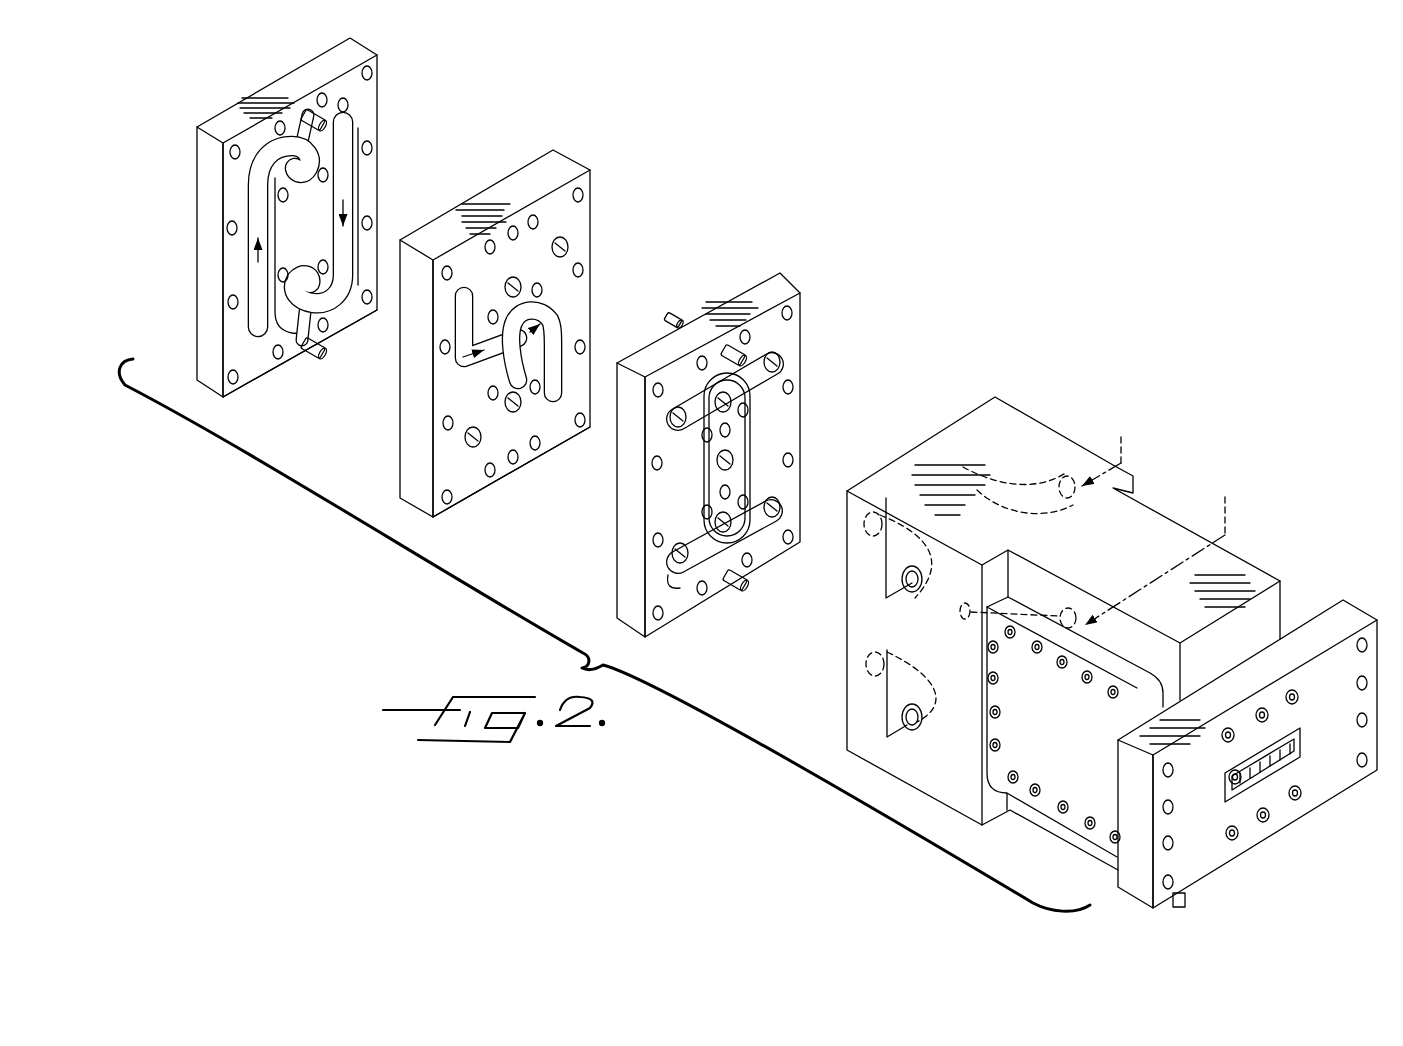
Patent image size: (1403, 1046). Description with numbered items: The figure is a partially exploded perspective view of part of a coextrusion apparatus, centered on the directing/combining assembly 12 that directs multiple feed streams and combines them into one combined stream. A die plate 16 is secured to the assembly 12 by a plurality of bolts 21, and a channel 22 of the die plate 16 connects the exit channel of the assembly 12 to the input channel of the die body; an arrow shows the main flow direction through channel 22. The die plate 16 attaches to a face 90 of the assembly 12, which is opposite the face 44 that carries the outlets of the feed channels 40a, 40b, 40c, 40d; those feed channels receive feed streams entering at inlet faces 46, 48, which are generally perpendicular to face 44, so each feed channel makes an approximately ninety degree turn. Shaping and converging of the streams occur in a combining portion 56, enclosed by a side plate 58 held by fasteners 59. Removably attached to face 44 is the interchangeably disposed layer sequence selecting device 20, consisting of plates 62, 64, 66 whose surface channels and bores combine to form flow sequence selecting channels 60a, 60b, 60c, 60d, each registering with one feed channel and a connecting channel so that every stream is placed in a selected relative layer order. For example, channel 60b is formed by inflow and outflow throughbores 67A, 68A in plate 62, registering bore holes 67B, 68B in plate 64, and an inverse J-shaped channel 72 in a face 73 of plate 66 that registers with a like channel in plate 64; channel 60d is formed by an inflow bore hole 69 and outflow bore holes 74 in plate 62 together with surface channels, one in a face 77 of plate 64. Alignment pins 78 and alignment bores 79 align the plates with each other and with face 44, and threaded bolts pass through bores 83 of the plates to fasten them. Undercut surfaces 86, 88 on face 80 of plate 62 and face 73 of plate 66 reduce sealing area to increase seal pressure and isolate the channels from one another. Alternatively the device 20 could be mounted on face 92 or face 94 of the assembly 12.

The assembly 12 is at (1014, 590).
The die plate 16 is at (1347, 612).
The layer sequence selecting device 20 is at (738, 150).
The bolts 21 is at (1265, 708).
The channel 22 is at (1237, 780).
The feed channel 40a is at (847, 647).
The feed channel 40b is at (866, 666).
The feed channel 40c is at (1000, 510).
The feed channel 40d is at (1007, 653).
The face 44 is at (912, 472).
The inlet face 46 is at (948, 783).
The inlet face 48 is at (1063, 458).
The combining portion 56 is at (1183, 535).
The side plate 58 is at (1121, 672).
The fasteners 59 is at (1113, 697).
The flow sequence selecting channel 60a is at (455, 373).
The flow sequence selecting channel 60b is at (243, 240).
The flow sequence selecting channel 60c is at (336, 244).
The flow sequence selecting channel 60d is at (575, 324).
The plate 62 is at (782, 270).
The plate 64 is at (583, 154).
The plate 66 is at (378, 52).
The throughbore 67A is at (662, 585).
The bore hole 67B is at (470, 440).
The throughbore 68A is at (776, 360).
The bore hole 68B is at (514, 280).
The bore hole 69 is at (776, 508).
The inverse J-shaped channel 72 is at (268, 143).
The face 73 is at (250, 376).
The bore holes 74 is at (748, 498).
The face 77 is at (460, 484).
The alignment pins 78 is at (310, 108).
The alignment bores 79 is at (513, 228).
The face 80 is at (752, 385).
The bores 83 is at (369, 149).
The undercut surface 86 is at (767, 400).
The undercut surface 88 is at (308, 120).
The face 90 is at (1213, 642).
The face 92 is at (962, 442).
The face 94 is at (850, 755).